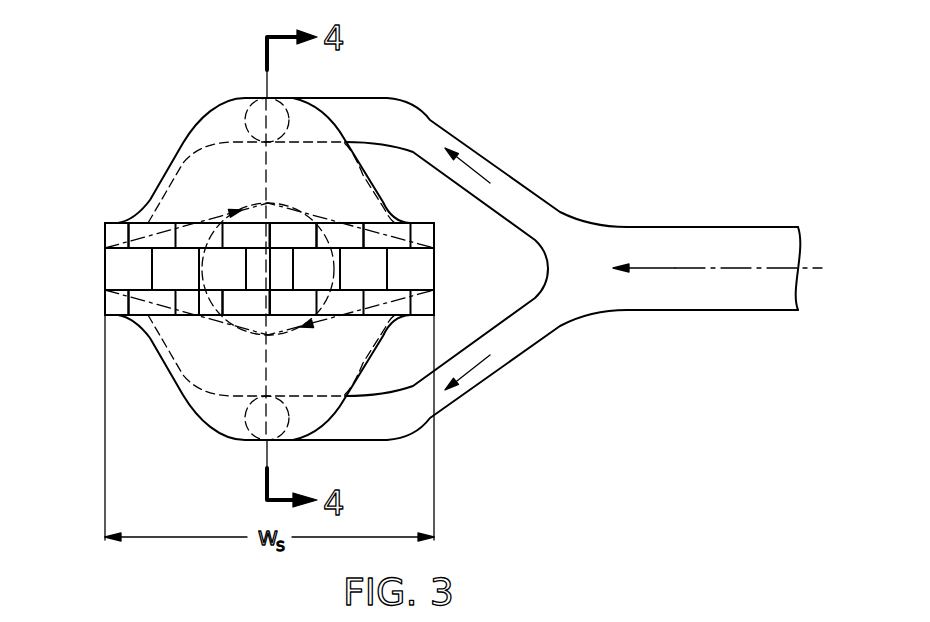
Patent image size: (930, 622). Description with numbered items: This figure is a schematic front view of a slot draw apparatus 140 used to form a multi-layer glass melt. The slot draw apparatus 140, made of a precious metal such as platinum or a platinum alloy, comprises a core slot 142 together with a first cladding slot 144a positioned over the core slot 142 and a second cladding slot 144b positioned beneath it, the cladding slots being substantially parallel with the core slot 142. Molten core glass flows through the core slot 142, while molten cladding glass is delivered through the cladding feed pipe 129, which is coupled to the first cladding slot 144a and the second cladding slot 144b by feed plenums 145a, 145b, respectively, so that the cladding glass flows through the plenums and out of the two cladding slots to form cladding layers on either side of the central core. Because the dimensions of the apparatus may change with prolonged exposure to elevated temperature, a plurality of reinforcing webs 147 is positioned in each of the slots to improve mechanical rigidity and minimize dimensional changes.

The slot draw apparatus 140 is at (127, 109).
The core slot 142 is at (100, 248).
The first cladding slot 144a is at (440, 223).
The second cladding slot 144b is at (440, 290).
The feed plenum 145a is at (531, 193).
The feed plenum 145b is at (531, 345).
The reinforcing webs 147 is at (130, 233).
The cladding feed pipe 129 is at (745, 310).